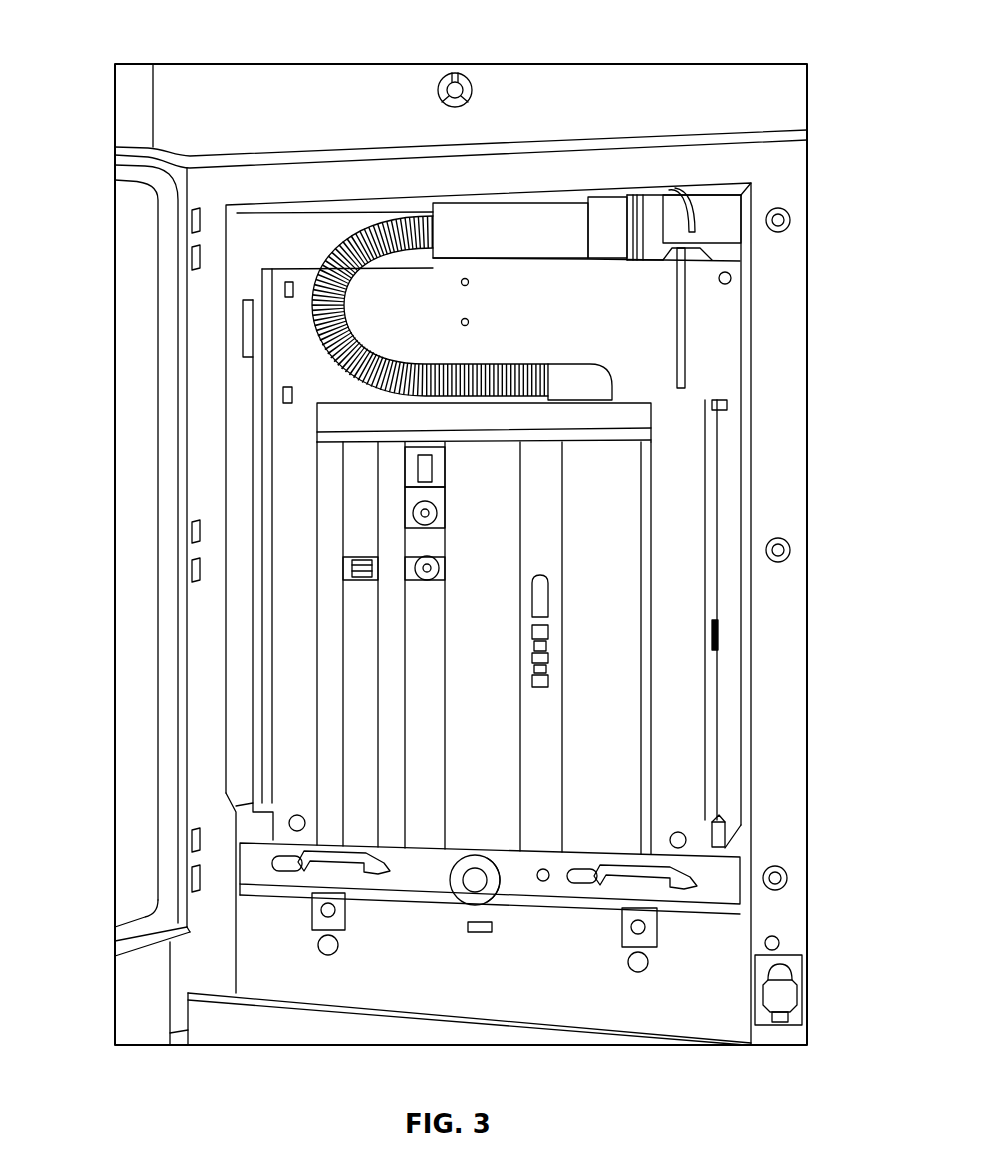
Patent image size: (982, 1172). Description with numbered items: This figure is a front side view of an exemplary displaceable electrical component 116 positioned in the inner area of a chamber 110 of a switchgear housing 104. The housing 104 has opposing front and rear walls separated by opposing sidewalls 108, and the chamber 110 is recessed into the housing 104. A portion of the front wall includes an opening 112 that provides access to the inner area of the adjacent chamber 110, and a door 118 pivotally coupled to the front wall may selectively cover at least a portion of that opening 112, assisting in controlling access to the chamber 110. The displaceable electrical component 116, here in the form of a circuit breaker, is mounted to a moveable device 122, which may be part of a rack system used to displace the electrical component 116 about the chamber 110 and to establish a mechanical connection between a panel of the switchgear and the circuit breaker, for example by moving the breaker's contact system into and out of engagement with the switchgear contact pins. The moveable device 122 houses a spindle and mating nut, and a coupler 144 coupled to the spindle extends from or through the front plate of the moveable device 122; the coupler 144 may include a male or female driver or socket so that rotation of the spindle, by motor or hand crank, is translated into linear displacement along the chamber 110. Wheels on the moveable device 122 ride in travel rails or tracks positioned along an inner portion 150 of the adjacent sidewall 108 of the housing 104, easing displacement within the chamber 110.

The housing 104 is at (777, 447).
The sidewall 108 is at (260, 227).
The chamber 110 is at (247, 253).
The opening 112 is at (292, 242).
The displaceable electrical component 116 is at (654, 338).
The door 118 is at (133, 883).
The moveable device 122 is at (682, 877).
The coupler 144 is at (472, 897).
The inner portion of the sidewall 150 is at (340, 138).